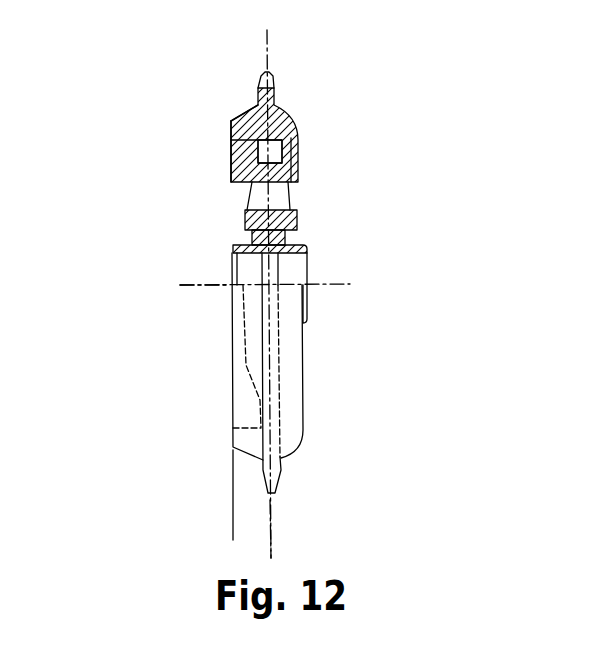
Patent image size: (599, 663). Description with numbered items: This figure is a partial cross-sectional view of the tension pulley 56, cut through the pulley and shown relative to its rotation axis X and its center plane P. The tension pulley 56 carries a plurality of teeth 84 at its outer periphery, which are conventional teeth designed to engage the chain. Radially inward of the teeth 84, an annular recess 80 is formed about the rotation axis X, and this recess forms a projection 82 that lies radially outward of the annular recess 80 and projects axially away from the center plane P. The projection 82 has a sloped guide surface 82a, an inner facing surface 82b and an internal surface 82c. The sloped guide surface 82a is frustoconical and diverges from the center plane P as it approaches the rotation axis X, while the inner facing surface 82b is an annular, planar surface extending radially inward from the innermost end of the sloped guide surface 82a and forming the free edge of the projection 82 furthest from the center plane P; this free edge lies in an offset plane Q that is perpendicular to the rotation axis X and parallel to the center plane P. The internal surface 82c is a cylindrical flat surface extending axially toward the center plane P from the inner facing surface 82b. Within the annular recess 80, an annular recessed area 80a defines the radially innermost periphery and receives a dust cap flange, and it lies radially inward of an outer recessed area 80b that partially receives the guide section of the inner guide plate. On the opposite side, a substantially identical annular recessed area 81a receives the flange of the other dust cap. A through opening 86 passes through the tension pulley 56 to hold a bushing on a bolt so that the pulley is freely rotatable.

The tension pulley 56 is at (251, 284).
The projection 82 is at (216, 114).
The sloped guide surface 82a is at (246, 111).
The inner facing surface 82b is at (230, 126).
The internal surface 82c is at (258, 150).
The teeth 84 is at (275, 96).
The annular recess 80 is at (240, 328).
The annular recessed area 80a is at (235, 252).
The outer recessed area 80b is at (250, 188).
The annular recessed area 81a is at (292, 233).
The through opening 86 is at (284, 257).
The rotation axis X is at (184, 288).
The offset plane Q is at (232, 497).
The center plane P is at (271, 537).